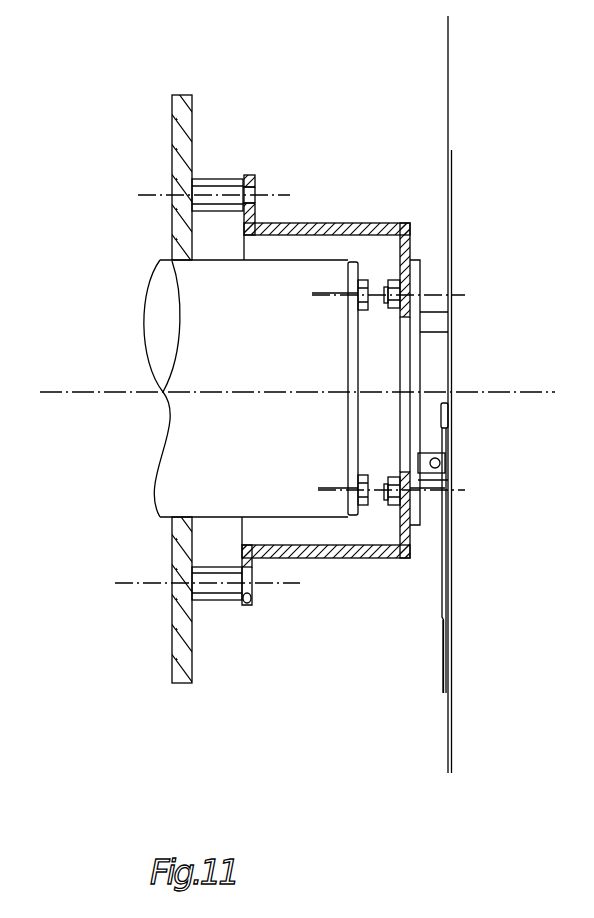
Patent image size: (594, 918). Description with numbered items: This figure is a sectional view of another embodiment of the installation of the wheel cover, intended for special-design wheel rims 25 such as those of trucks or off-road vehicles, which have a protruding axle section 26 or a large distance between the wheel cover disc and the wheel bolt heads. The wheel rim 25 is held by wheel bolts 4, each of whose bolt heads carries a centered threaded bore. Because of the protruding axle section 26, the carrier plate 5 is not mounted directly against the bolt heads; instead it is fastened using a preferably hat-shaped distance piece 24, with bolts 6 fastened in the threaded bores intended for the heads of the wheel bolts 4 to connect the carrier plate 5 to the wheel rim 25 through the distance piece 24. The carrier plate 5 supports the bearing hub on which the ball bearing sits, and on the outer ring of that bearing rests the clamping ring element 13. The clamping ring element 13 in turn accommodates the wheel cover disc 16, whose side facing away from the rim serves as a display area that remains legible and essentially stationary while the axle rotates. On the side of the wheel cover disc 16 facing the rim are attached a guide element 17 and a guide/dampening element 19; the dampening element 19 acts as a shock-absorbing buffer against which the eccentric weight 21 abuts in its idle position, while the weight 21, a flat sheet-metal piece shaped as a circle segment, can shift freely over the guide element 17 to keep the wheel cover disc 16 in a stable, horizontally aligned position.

The wheel bolt 4 is at (215, 197).
The carrier plate 5 is at (413, 479).
The bolt 6 is at (253, 195).
The clamping ring element 13 is at (435, 348).
The wheel cover disc 16 is at (450, 245).
The guide element 17 is at (445, 418).
The guide/dampening element 19 is at (443, 538).
The eccentric weight 21 is at (442, 635).
The distance piece 24 is at (368, 225).
The special-design wheel rim 25 is at (183, 120).
The protruding axle section 26 is at (220, 307).